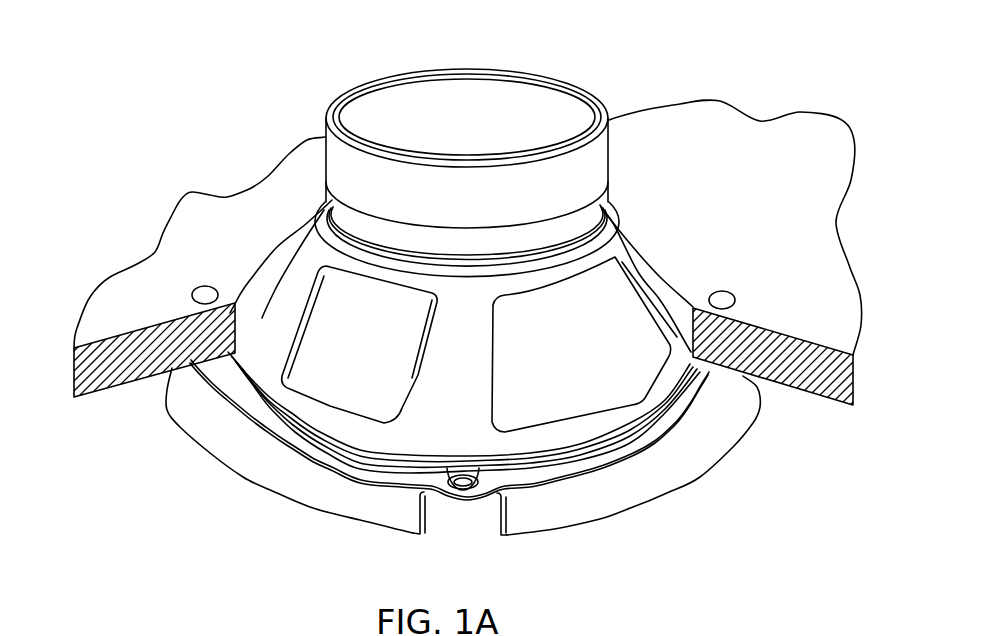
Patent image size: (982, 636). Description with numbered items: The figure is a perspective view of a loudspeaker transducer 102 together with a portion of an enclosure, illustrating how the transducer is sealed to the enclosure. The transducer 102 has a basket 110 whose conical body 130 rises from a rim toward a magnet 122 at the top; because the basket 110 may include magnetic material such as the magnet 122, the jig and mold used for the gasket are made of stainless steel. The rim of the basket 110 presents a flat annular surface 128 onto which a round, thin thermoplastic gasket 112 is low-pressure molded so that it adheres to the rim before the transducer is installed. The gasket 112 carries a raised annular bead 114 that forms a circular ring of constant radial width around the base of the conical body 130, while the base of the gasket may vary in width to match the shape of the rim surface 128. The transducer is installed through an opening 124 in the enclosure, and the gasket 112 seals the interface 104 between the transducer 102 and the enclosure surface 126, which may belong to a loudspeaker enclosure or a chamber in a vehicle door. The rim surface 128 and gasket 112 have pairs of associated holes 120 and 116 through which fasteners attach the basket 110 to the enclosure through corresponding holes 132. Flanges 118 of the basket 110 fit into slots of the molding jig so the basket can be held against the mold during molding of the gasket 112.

The loudspeaker transducer 102 is at (397, 66).
The interface 104 is at (205, 370).
The basket 110 is at (634, 217).
The gasket 112 is at (705, 390).
The bead 114 is at (667, 420).
The holes 116 is at (455, 476).
The flanges 118 is at (303, 497).
The holes 120 is at (470, 452).
The magnet 122 is at (495, 209).
The opening 124 is at (668, 296).
The surface 126 is at (841, 409).
The annular surface 128 is at (424, 493).
The conical body 130 is at (639, 271).
The holes 132 is at (198, 291).